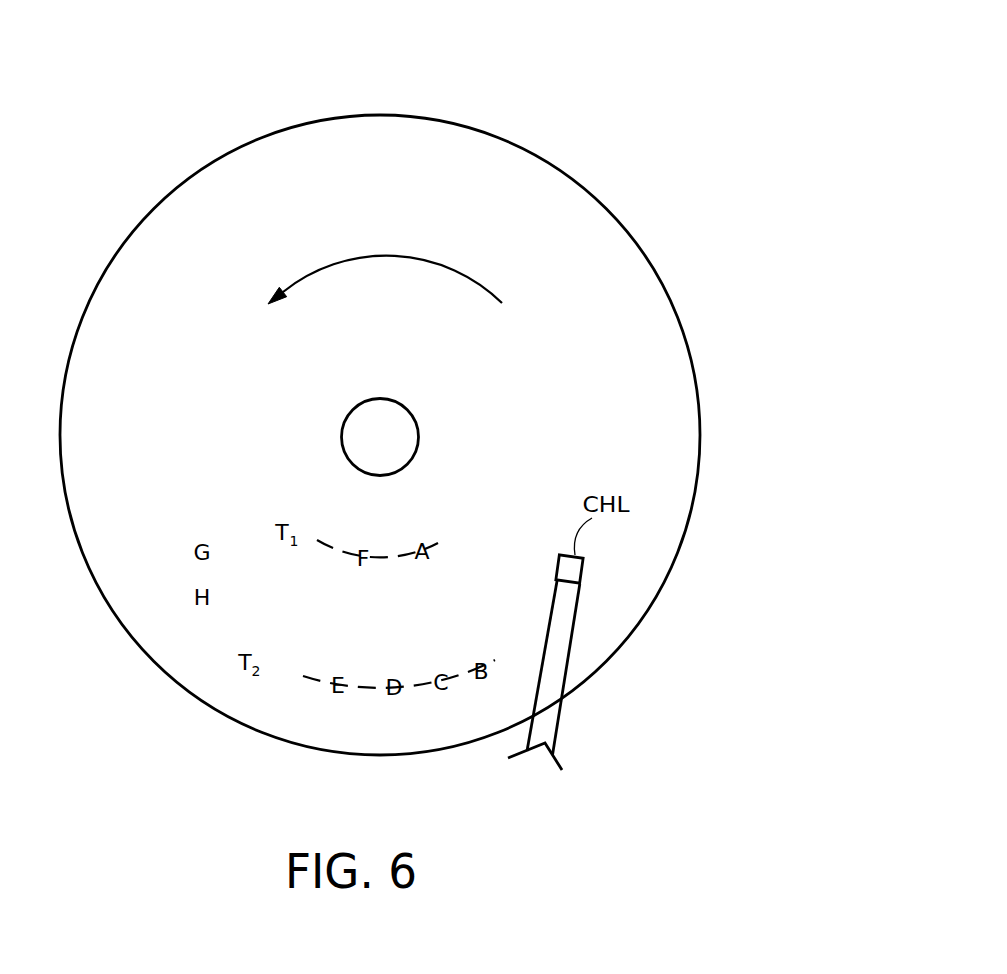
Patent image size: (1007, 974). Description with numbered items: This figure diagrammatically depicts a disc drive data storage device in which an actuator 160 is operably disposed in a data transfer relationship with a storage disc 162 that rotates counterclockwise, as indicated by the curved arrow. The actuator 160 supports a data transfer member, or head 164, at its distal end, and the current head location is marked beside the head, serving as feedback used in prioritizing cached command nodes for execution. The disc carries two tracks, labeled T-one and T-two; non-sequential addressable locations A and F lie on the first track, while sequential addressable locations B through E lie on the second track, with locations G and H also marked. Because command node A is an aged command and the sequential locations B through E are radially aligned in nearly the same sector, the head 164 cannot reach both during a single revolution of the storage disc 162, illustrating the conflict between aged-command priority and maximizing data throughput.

The actuator 160 is at (575, 690).
The storage disc 162 is at (523, 145).
The data transfer member (head) 164 is at (583, 572).